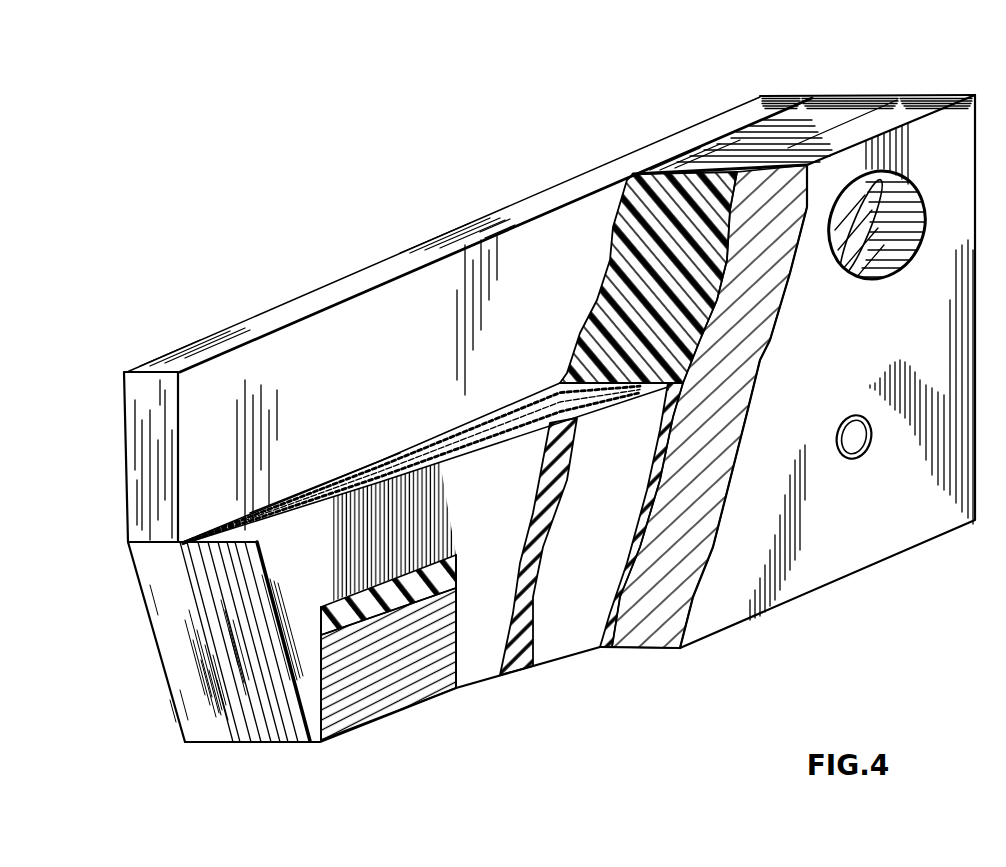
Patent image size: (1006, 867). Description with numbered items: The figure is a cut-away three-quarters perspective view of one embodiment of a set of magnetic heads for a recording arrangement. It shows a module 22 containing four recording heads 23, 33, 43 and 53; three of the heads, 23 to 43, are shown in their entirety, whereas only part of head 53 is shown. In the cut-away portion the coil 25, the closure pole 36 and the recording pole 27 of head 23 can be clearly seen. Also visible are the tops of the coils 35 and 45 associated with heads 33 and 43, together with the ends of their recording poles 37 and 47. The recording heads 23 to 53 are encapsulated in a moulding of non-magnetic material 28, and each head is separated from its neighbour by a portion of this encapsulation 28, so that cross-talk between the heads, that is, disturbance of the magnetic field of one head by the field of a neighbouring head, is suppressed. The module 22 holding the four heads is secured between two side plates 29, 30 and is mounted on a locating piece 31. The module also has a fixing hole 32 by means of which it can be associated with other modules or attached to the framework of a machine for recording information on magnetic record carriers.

The module 22 is at (523, 392).
The recording head 23 is at (307, 700).
The coil 25 is at (440, 505).
The recording pole 27 is at (306, 742).
The moulding of non-magnetic material 28 is at (862, 98).
The side plate 29 is at (778, 97).
The side plate 30 is at (942, 97).
The locating piece 31 is at (432, 643).
The fixing hole 32 is at (867, 253).
The recording head 33 is at (281, 742).
The coil 35 is at (336, 478).
The closure pole 36 is at (477, 655).
The recording pole 37 is at (253, 650).
The recording head 43 is at (255, 742).
The coil 45 is at (403, 456).
The recording pole 47 is at (247, 707).
The recording head 53 is at (567, 657).